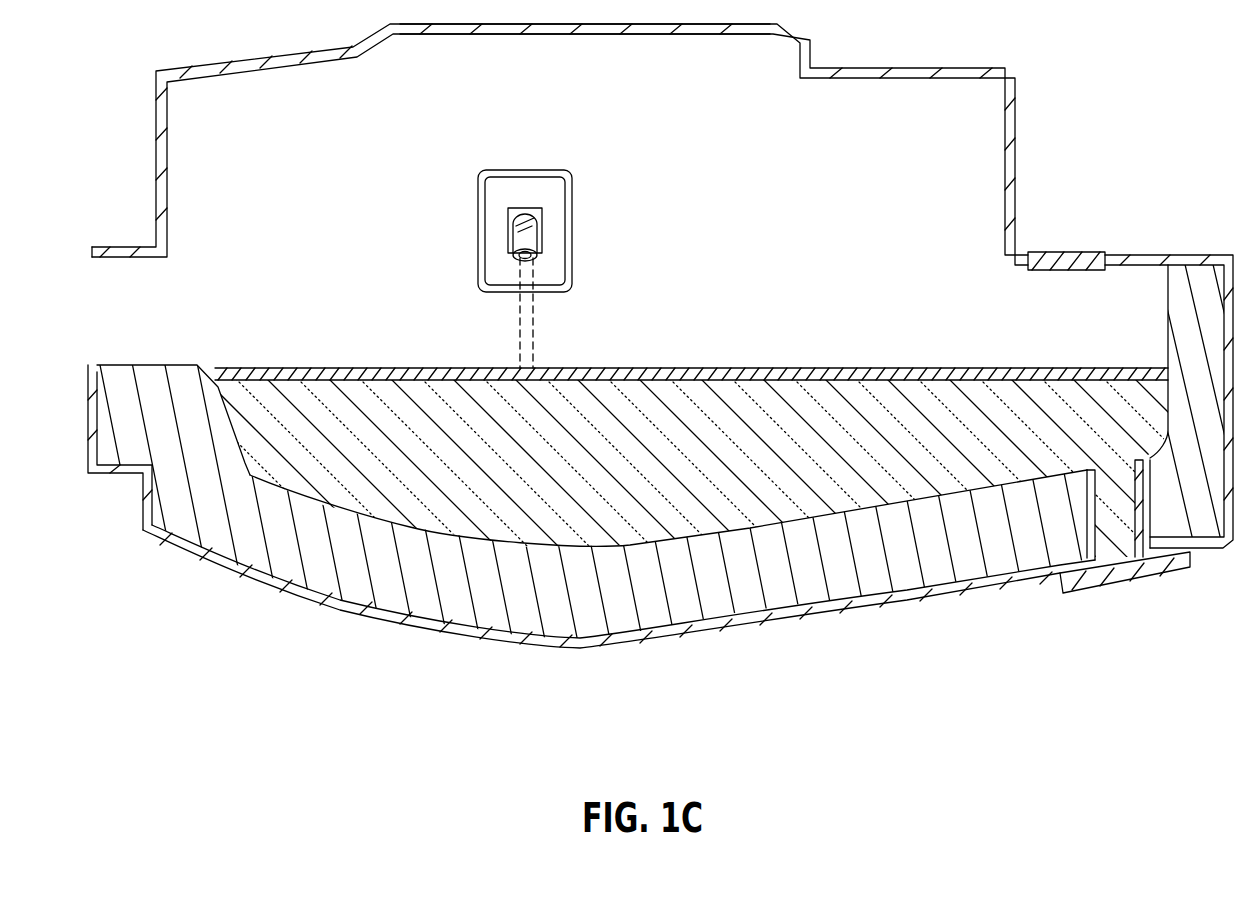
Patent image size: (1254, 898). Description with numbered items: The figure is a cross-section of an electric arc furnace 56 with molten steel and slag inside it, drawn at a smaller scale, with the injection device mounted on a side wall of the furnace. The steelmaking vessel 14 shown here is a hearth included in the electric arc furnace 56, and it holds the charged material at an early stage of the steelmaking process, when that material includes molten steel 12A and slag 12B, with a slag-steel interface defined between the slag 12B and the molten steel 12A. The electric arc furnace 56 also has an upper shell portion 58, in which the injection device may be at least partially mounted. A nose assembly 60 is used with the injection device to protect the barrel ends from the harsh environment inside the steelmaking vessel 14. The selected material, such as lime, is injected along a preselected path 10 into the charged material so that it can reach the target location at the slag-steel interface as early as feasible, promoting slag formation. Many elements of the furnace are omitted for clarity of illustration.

The preselected path 10 is at (533, 317).
The molten steel 12A is at (840, 493).
The slag 12B is at (750, 368).
The steelmaking vessel 14 is at (297, 558).
The electric arc furnace 56 is at (1058, 152).
The upper shell portion 58 is at (913, 65).
The nose assembly 60 is at (542, 222).